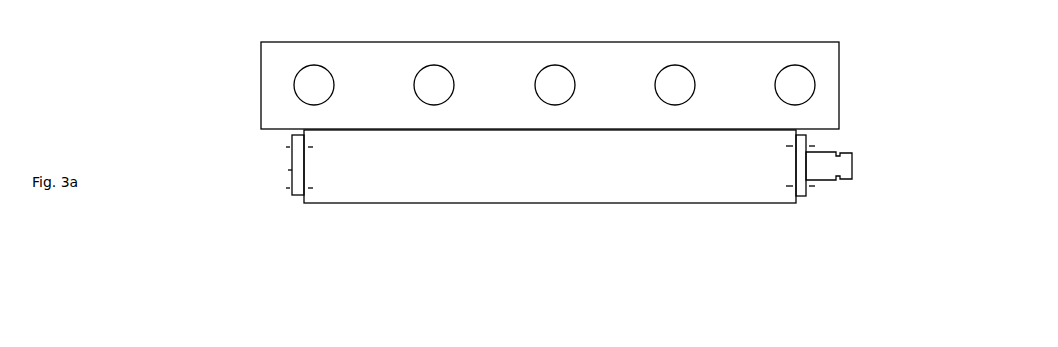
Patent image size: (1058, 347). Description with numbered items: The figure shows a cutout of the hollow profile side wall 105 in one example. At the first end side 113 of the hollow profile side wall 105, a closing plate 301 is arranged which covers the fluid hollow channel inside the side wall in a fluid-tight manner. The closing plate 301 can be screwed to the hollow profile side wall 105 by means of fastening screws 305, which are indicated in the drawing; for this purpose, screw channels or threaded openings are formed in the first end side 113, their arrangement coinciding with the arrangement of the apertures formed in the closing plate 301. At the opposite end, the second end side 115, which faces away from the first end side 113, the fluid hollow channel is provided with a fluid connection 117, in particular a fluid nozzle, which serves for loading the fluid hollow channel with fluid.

The hollow profile side wall 105 is at (641, 206).
The first end side 113 is at (303, 204).
The second end side 115 is at (798, 204).
The fluid connection 117 is at (856, 172).
The fastening screws 305 is at (289, 151).
The closing plate 301 is at (292, 170).